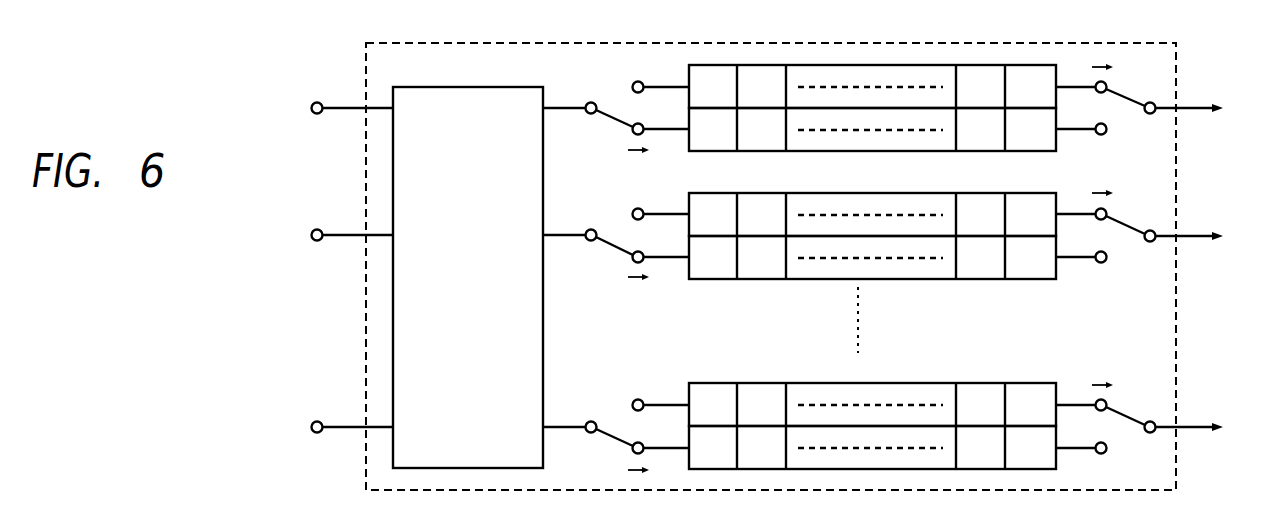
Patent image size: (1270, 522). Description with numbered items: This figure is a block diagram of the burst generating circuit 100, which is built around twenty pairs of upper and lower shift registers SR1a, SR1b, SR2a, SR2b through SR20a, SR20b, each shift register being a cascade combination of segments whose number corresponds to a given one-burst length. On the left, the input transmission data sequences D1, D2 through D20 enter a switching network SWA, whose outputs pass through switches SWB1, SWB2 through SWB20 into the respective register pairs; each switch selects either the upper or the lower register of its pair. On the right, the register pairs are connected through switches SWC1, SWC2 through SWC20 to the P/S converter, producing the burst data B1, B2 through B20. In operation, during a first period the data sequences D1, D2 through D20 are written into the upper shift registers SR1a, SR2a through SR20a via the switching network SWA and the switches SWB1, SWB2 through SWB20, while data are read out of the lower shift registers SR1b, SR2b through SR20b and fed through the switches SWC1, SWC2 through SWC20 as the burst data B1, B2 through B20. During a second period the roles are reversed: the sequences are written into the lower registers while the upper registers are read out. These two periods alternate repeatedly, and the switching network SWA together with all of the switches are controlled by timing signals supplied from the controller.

The burst generating circuit 100 is at (1177, 67).
The switching network SWA is at (477, 86).
The switch SWB1 is at (606, 108).
The switch SWB2 is at (606, 236).
The switch SWB20 is at (606, 427).
The switch SWC1 is at (1127, 97).
The switch SWC2 is at (1130, 225).
The switch SWC20 is at (1130, 415).
The upper shift register SR1a is at (945, 65).
The lower shift register SR1b is at (946, 151).
The upper shift register SR2a is at (798, 193).
The lower shift register SR2b is at (798, 279).
The upper shift register SR20a is at (943, 383).
The lower shift register SR20b is at (943, 470).
The input transmission data sequence D1 is at (330, 110).
The input transmission data sequence D2 is at (330, 237).
The input transmission data sequence D20 is at (330, 429).
The burst data B1 is at (1208, 110).
The burst data B2 is at (1208, 238).
The burst data B20 is at (1211, 430).